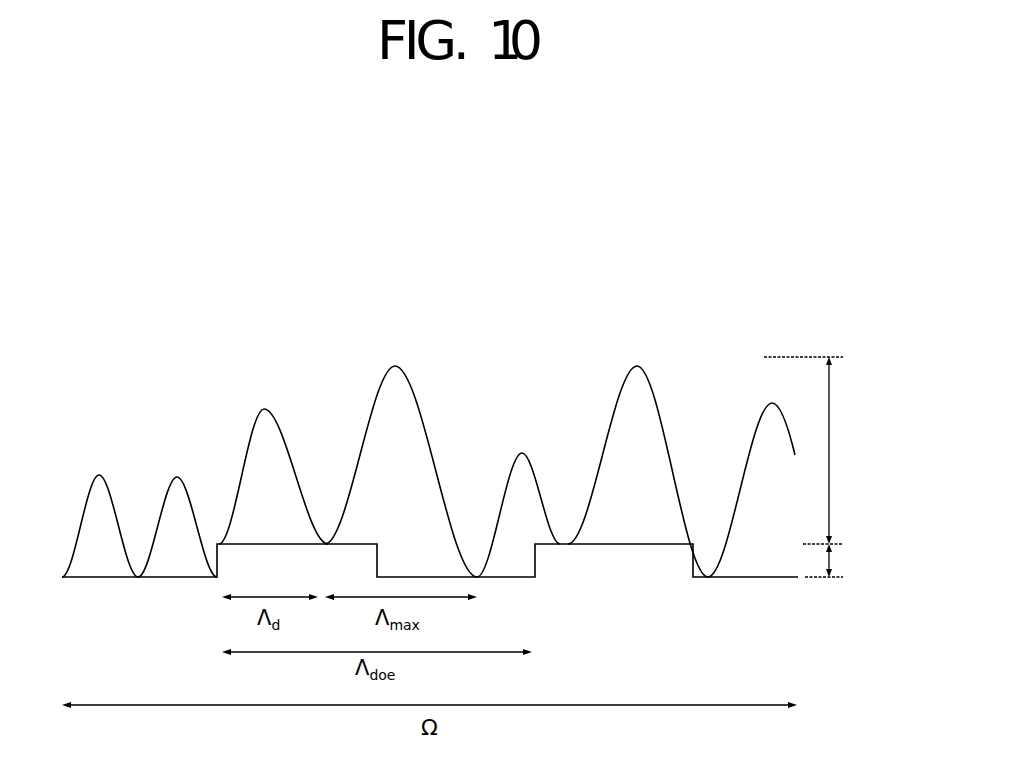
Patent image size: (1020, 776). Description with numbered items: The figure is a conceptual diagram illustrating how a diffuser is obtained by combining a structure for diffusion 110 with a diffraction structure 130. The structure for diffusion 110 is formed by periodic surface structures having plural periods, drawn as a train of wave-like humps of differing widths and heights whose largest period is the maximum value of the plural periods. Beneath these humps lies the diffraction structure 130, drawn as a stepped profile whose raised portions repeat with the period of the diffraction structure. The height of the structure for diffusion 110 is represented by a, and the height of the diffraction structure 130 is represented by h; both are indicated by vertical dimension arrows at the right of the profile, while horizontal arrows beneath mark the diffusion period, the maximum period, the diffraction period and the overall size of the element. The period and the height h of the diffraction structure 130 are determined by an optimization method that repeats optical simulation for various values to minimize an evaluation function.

The structure for diffusion 110 is at (436, 455).
The diffraction structure 130 is at (607, 545).
The height of the structure for diffusion a is at (812, 450).
The height of the diffraction structure h is at (833, 560).